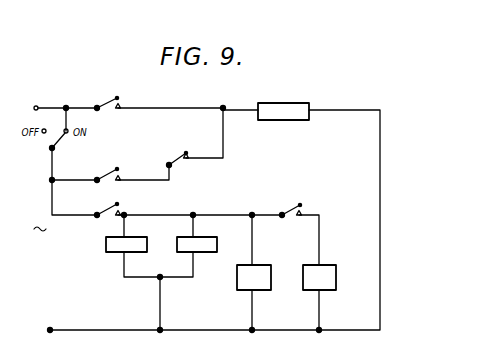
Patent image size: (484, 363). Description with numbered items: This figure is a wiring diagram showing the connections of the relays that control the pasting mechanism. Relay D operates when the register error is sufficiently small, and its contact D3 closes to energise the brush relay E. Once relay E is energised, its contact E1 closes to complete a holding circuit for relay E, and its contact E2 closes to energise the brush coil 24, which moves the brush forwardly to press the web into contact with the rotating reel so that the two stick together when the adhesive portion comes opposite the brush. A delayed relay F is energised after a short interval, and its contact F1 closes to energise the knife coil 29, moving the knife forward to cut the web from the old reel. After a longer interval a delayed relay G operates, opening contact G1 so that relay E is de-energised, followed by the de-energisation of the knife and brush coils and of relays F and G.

The contact D3 is at (111, 93).
The contact E1 is at (111, 168).
The contact G1 is at (83, 258).
The contact E2 is at (291, 83).
The contact F1 is at (204, 275).
The brush coil 24 is at (256, 272).
The knife coil 29 is at (318, 272).